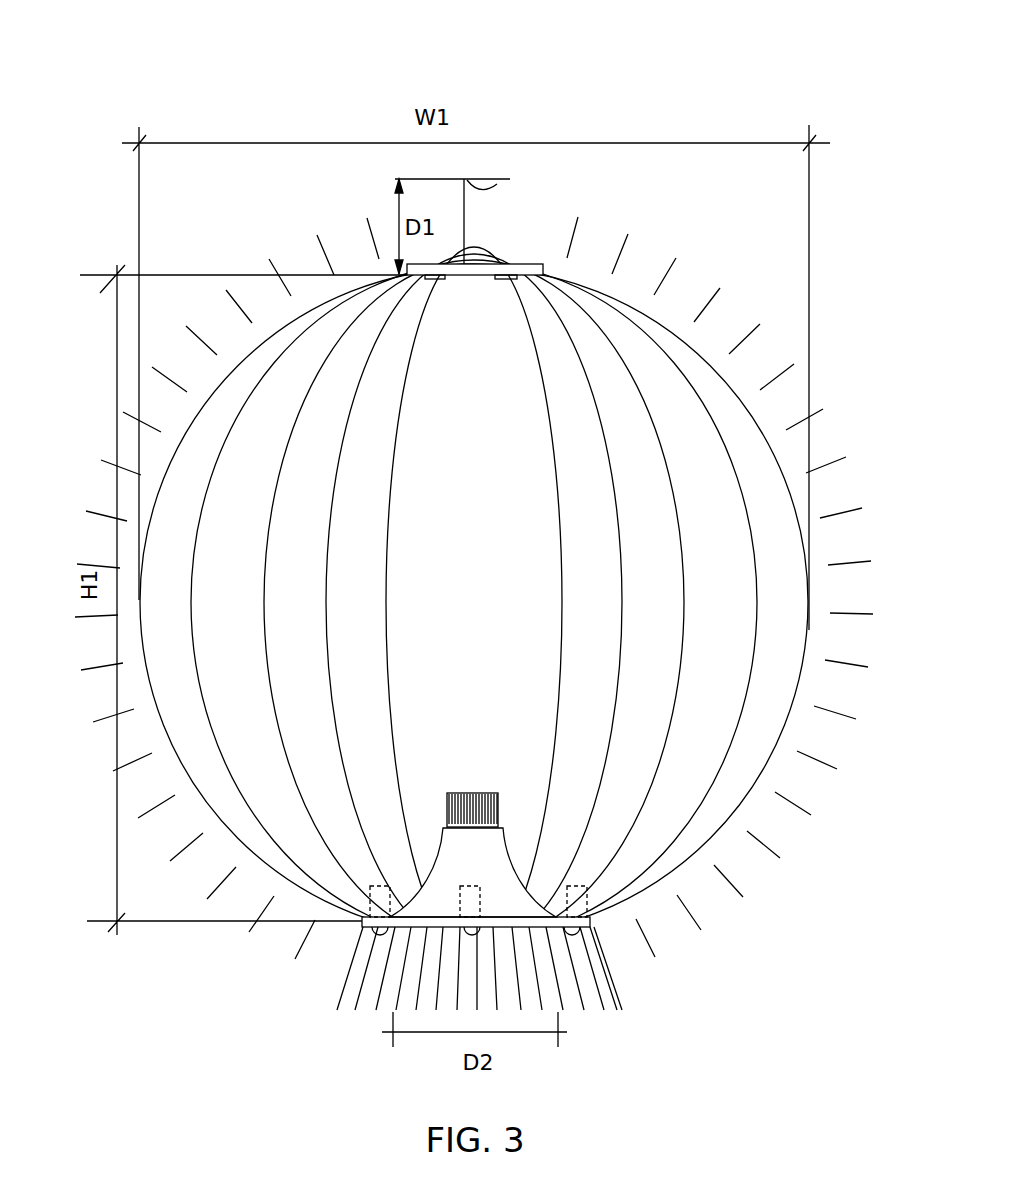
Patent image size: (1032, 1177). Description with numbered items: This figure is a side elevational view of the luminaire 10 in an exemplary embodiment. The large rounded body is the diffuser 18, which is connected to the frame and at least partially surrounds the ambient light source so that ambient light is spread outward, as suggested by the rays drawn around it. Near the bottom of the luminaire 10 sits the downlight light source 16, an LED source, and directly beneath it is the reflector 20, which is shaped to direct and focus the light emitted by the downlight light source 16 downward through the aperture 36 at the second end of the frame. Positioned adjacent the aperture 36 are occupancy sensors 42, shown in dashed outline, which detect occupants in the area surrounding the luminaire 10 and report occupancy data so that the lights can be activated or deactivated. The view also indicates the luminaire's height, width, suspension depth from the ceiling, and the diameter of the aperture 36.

The luminaire 10 is at (733, 88).
The downlight light source 16 is at (517, 779).
The diffuser 18 is at (725, 540).
The reflector 20 is at (532, 872).
The aperture 36 is at (597, 960).
The occupancy sensor 42 is at (363, 915).